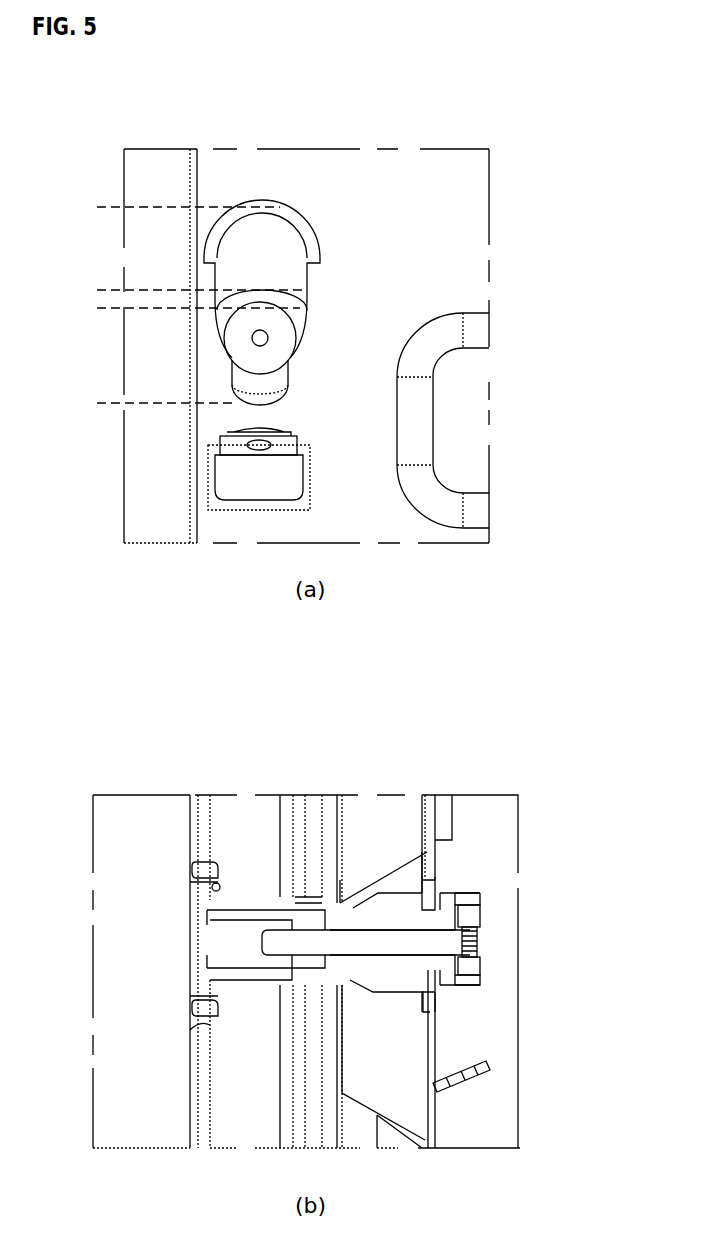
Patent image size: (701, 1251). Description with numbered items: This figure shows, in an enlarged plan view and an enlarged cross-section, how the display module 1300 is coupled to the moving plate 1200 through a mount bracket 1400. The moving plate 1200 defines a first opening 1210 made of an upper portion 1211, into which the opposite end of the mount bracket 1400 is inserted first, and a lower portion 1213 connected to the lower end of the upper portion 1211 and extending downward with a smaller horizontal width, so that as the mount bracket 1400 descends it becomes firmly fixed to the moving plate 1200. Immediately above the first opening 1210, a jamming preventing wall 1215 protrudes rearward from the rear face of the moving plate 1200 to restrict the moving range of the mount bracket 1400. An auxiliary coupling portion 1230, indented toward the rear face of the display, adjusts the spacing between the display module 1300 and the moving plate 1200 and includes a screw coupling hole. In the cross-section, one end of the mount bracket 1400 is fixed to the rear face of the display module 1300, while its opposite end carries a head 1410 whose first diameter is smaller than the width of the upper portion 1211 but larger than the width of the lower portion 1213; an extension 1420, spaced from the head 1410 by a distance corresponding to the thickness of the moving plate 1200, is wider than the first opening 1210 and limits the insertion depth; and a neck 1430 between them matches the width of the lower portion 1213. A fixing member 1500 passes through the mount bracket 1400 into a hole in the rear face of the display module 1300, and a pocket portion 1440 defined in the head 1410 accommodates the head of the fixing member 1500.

The moving plate 1200 is at (402, 193).
The first opening 1210 is at (279, 242).
The upper portion 1211 is at (110, 207).
The lower portion 1213 is at (110, 308).
The jamming preventing wall 1215 is at (224, 228).
The auxiliary coupling portion 1230 is at (405, 885).
The display module 1300 is at (342, 787).
The mount bracket 1400 is at (270, 375).
The head 1410 is at (480, 905).
The extension 1420 is at (440, 872).
The neck 1430 is at (482, 892).
The pocket portion 1440 is at (478, 932).
The fixing member 1500 is at (262, 338).